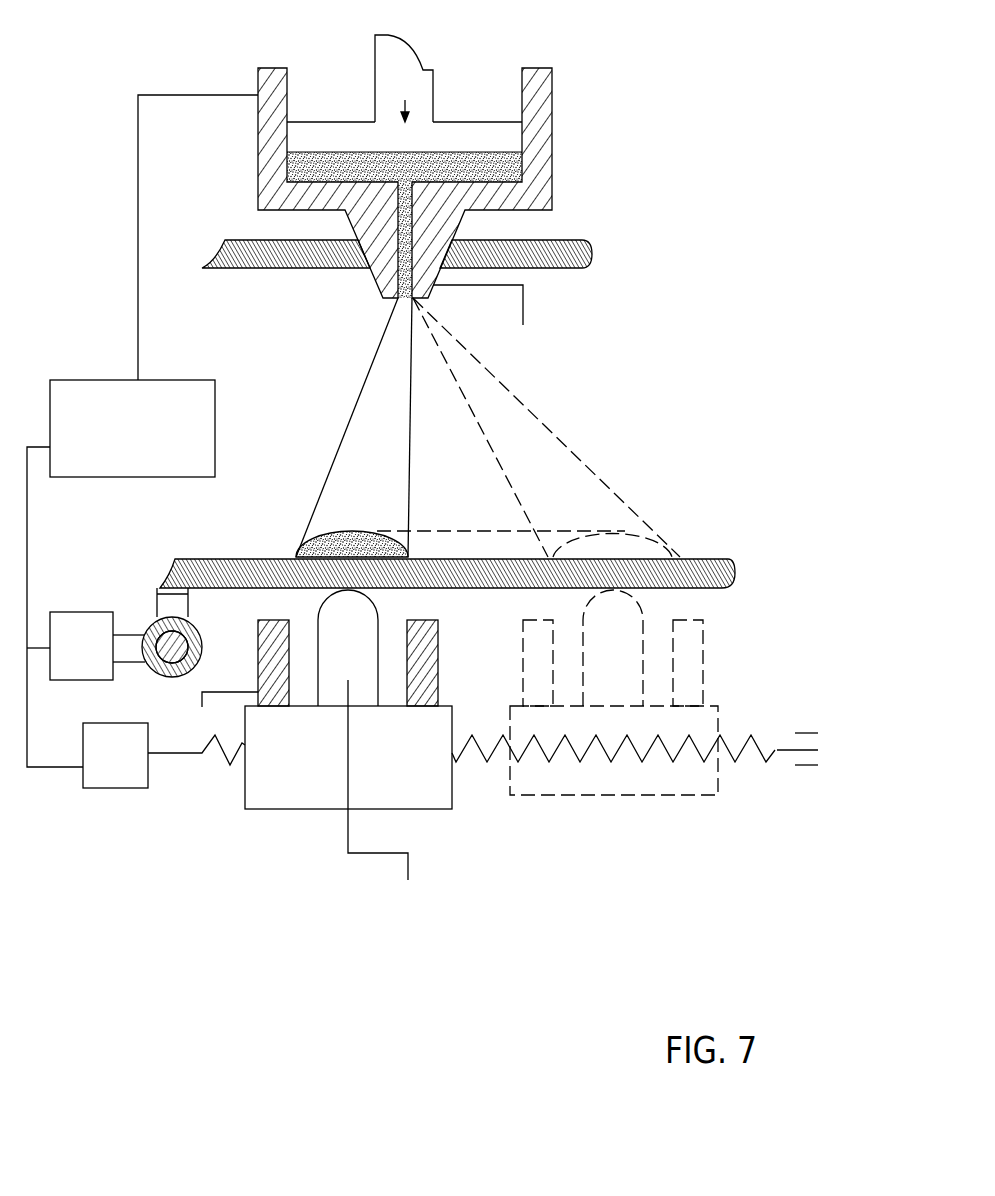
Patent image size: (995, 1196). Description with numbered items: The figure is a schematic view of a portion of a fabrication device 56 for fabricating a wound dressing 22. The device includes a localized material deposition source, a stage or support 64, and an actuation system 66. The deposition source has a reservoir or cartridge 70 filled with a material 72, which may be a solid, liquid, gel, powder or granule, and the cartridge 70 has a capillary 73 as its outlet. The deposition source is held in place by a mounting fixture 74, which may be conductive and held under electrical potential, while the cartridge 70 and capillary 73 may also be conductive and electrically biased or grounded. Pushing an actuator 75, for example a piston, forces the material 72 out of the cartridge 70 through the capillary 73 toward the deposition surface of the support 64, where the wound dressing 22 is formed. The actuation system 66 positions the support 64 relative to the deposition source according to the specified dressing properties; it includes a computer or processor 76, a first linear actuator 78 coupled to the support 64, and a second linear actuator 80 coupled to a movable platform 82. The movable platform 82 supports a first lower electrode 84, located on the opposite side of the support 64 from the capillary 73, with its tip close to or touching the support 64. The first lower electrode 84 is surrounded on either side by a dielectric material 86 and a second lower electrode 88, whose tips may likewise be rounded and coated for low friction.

The wound dressing 22 is at (525, 530).
The fabrication device 56 is at (660, 398).
The support 64 is at (733, 575).
The actuation system 66 is at (763, 590).
The cartridge 70 is at (551, 190).
The material 72 is at (547, 166).
The capillary 73 is at (385, 278).
The mounting fixture 74 is at (577, 242).
The actuator 75 is at (397, 62).
The processor 76 is at (175, 467).
The first linear actuator 78 is at (68, 657).
The second linear actuator 80 is at (102, 767).
The movable platform 82 is at (274, 802).
The first lower electrode 84 is at (335, 641).
The dielectric material 86 is at (311, 695).
The second lower electrode 88 is at (275, 695).